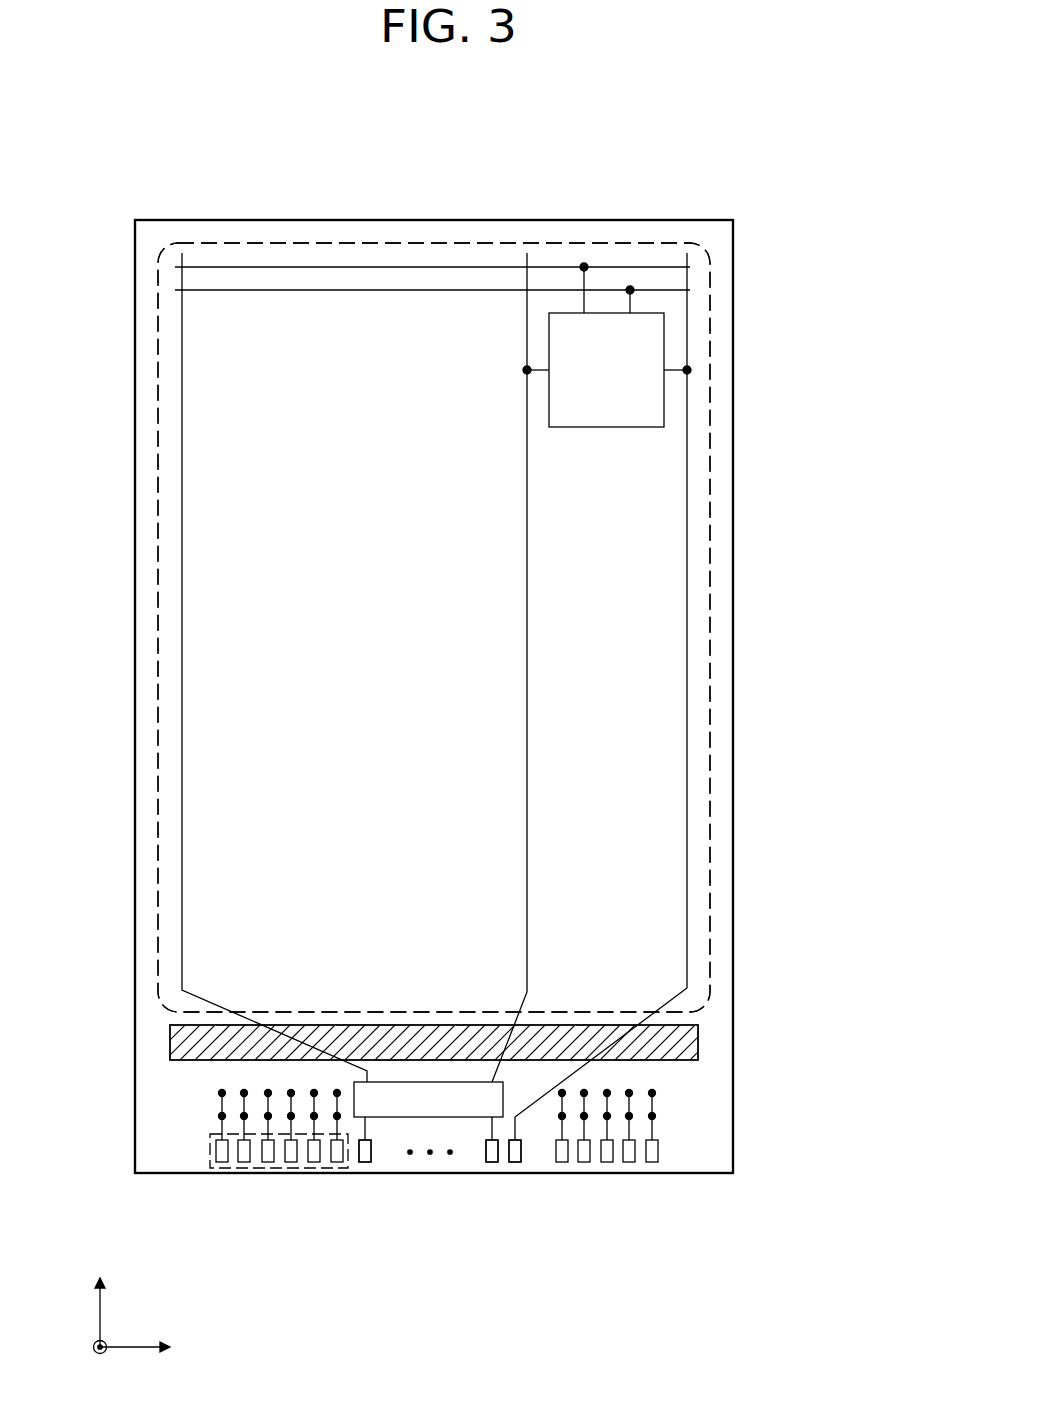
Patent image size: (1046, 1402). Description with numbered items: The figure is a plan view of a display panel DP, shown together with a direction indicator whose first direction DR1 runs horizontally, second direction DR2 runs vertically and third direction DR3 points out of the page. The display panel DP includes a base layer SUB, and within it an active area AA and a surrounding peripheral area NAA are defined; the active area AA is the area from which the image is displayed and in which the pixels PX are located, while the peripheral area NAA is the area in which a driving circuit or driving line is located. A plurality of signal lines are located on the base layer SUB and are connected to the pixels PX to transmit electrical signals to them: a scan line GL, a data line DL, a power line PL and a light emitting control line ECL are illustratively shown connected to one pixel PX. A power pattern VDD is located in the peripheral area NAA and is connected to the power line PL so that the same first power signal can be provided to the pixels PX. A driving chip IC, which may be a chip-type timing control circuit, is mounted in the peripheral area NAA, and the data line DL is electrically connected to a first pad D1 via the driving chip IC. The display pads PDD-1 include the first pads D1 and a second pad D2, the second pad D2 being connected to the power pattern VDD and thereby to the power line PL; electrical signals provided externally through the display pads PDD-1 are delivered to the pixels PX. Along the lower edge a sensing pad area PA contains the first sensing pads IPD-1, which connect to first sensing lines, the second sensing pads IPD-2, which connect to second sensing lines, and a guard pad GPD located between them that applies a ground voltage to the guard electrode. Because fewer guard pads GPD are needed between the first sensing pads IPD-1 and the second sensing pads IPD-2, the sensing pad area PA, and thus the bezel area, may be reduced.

The display panel DP is at (746, 186).
The base layer SUB is at (733, 465).
The peripheral area NAA is at (720, 516).
The active area AA is at (695, 566).
The data line DL is at (180, 307).
The light emitting control line ECL is at (420, 290).
The scan line GL is at (563, 267).
The power line PL is at (687, 278).
The pixel PX is at (664, 342).
The power pattern VDD is at (685, 1040).
The driving chip IC is at (423, 1082).
The sensing pad area PA is at (210, 1142).
The first sensing pad IPD-1 is at (273, 1175).
The guard pad GPD is at (291, 1168).
The second sensing pad IPD-2 is at (343, 1175).
The first pad D1 is at (497, 1175).
The second pad D2 is at (515, 1168).
The display pads PDD-1 is at (507, 1255).
The first direction DR1 is at (155, 1345).
The second direction DR2 is at (101, 1297).
The third direction DR3 is at (101, 1362).